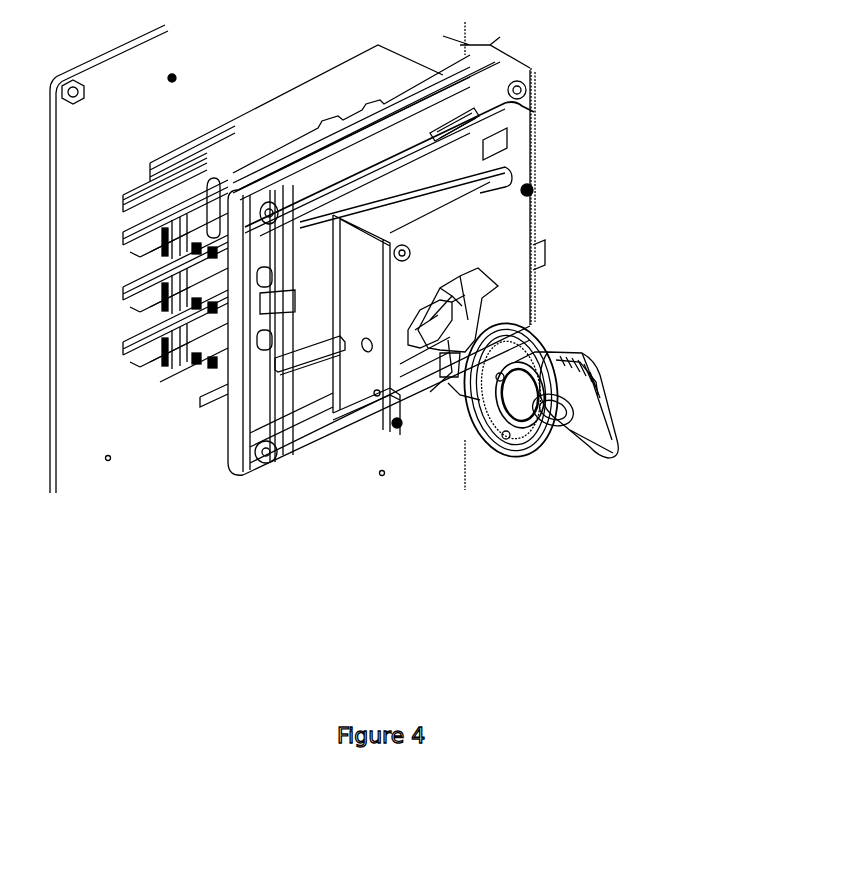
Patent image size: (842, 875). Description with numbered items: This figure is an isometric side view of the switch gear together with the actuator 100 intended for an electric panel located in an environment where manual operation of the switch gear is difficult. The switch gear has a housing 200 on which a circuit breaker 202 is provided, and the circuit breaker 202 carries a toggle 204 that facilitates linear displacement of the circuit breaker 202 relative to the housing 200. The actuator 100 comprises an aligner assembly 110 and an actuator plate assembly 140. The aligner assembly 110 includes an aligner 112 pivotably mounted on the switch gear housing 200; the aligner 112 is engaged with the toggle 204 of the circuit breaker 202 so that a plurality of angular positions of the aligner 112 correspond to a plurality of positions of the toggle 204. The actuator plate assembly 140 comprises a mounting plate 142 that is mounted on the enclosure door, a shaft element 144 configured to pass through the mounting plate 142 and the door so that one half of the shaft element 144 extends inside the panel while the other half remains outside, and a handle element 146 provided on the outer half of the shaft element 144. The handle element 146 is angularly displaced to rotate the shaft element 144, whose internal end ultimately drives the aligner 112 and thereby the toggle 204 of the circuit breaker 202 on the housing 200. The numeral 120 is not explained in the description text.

The actuator 100 is at (578, 300).
The aligner assembly 110 is at (541, 202).
The aligner 112 is at (448, 383).
The housing 120 is at (481, 227).
The actuator plate assembly 140 is at (592, 470).
The mounting plate 142 is at (563, 338).
The shaft element 144 is at (556, 422).
The handle element 146 is at (620, 448).
The housing 200 is at (460, 170).
The circuit breaker 202 is at (322, 363).
The toggle 204 is at (448, 322).